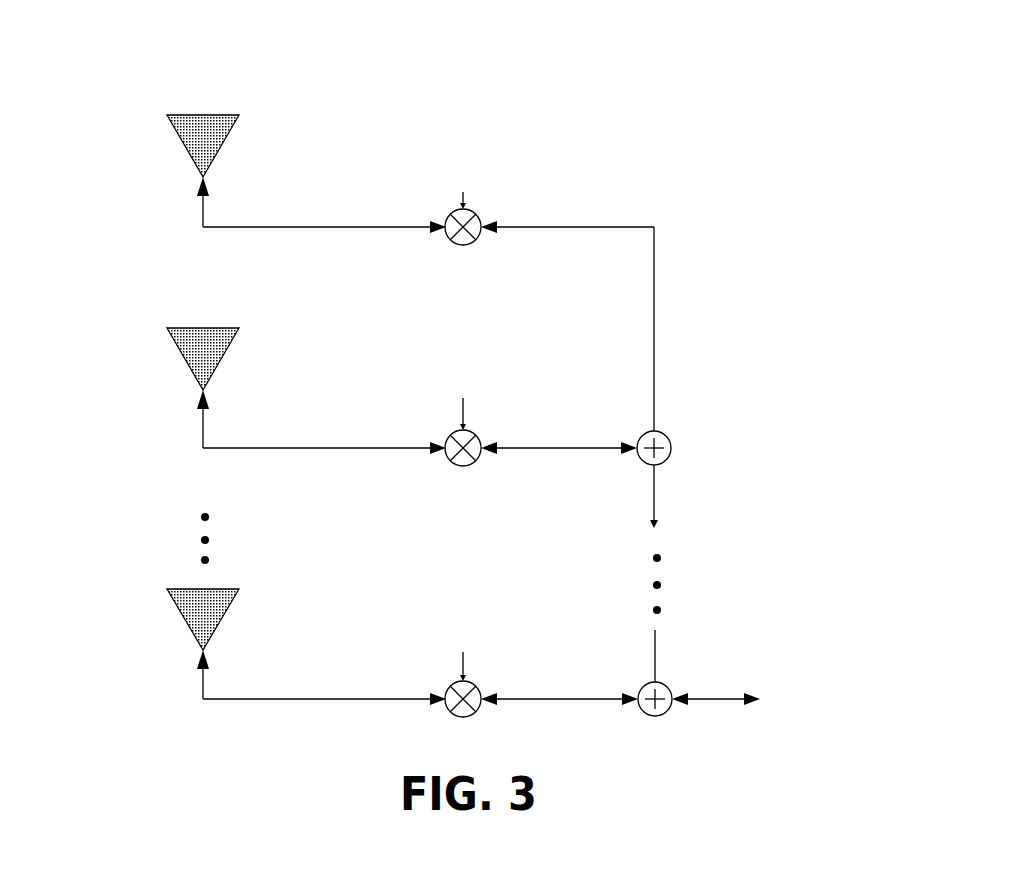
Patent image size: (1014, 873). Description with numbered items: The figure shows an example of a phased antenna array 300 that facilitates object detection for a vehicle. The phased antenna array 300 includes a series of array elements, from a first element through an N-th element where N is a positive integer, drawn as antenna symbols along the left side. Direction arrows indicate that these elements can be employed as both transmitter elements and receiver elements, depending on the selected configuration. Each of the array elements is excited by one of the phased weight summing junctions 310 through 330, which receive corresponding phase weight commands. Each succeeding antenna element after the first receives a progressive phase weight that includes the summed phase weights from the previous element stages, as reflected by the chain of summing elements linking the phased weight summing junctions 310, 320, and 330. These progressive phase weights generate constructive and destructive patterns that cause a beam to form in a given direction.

The phased antenna array 300 is at (892, 54).
The phased weight summing junction 310 is at (472, 211).
The phased weight summing junction 320 is at (472, 432).
The phased weight summing junction 330 is at (471, 683).